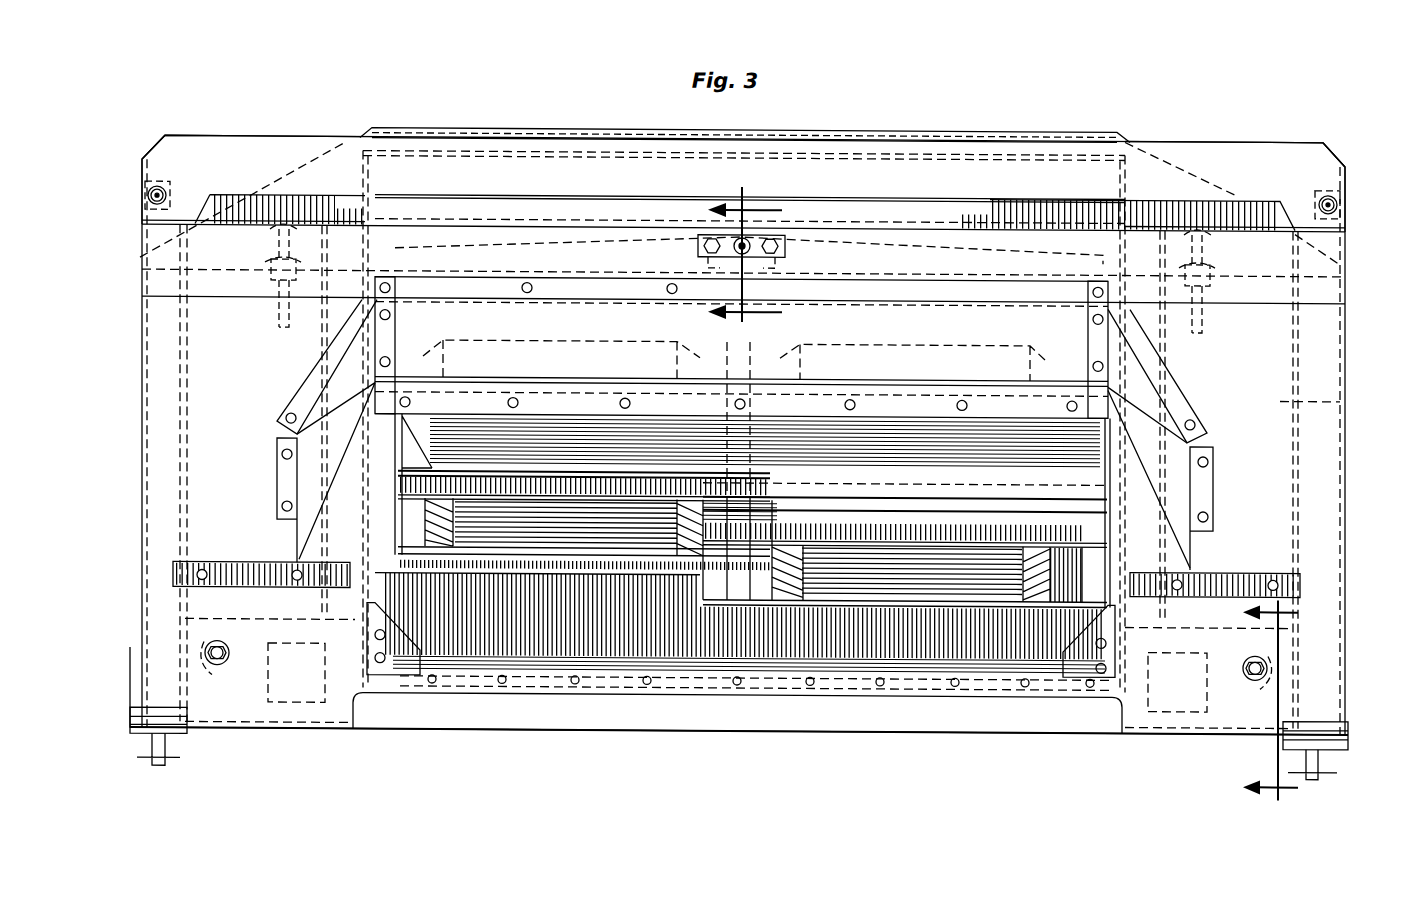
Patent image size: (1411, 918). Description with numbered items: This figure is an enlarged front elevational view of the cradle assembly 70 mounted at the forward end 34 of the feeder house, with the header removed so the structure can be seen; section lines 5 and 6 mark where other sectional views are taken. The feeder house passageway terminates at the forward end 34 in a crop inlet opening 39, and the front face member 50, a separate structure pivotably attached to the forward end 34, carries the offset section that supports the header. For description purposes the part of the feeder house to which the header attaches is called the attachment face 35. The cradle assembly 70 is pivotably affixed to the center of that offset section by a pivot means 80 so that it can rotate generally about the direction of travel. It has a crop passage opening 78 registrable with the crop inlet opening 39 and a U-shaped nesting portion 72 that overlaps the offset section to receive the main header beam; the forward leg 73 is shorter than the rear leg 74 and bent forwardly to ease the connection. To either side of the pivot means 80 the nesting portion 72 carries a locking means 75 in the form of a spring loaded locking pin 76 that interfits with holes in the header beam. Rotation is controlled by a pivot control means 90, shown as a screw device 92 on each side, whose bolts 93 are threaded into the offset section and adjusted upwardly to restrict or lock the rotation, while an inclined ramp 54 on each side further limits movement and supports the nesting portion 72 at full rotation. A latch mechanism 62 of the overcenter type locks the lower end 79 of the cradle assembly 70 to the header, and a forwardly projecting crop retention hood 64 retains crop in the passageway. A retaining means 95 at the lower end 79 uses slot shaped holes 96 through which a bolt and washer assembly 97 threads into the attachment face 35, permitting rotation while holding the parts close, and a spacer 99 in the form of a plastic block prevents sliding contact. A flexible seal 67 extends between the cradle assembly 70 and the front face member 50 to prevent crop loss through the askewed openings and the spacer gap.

The forward end 34 is at (368, 160).
The attachment face 35 is at (836, 128).
The crop inlet opening 39 is at (397, 508).
The front face member 50 is at (320, 162).
The inclined ramp 54 is at (492, 244).
The latch mechanism 62 is at (167, 752).
The crop retention hood 64 is at (300, 470).
The flexible seal 67 is at (537, 660).
The cradle assembly 70 is at (1345, 342).
The nesting portion 72 is at (250, 139).
The forward leg 73 is at (1230, 222).
The rear leg 74 is at (1218, 139).
The locking means 75 is at (132, 190).
The spring loaded locking pin 76 is at (166, 195).
The crop passage opening 78 is at (375, 630).
The lower end 79 is at (580, 731).
The pivot means 80 is at (783, 250).
The pivot control means 90 is at (268, 330).
The screw device 92 is at (276, 278).
The bolts 93 is at (298, 262).
The retaining means 95 is at (168, 632).
The slot shaped holes 96 is at (230, 650).
The bolt and washer assembly 97 is at (226, 668).
The spacer 99 is at (276, 705).
The section line 5- 5 is at (751, 259).
The section line 6- 6 is at (1285, 708).